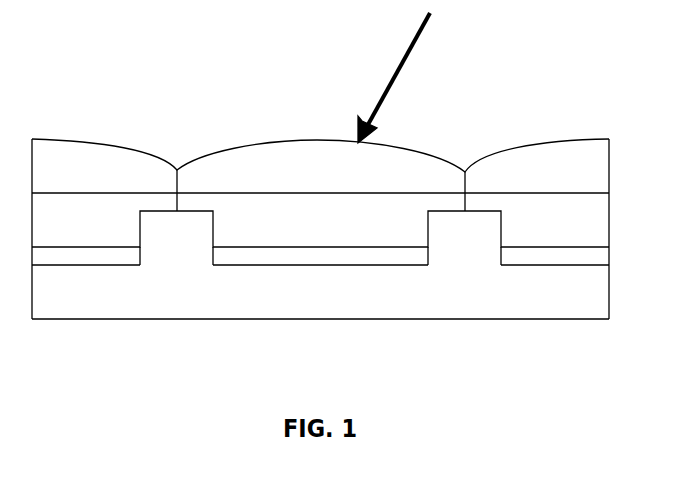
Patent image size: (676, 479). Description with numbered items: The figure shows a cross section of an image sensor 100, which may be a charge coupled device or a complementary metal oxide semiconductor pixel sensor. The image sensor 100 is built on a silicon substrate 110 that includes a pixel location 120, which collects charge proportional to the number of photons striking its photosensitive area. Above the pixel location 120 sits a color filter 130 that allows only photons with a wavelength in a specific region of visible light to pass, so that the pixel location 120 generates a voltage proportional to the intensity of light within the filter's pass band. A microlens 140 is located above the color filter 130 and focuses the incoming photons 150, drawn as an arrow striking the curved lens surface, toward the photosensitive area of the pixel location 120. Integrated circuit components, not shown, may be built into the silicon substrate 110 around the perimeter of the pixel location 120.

The image sensor 100 is at (158, 112).
The silicon substrate 110 is at (465, 320).
The pixel location 120 is at (265, 266).
The color filter 130 is at (218, 193).
The microlens 140 is at (432, 152).
The photons 150 is at (392, 72).